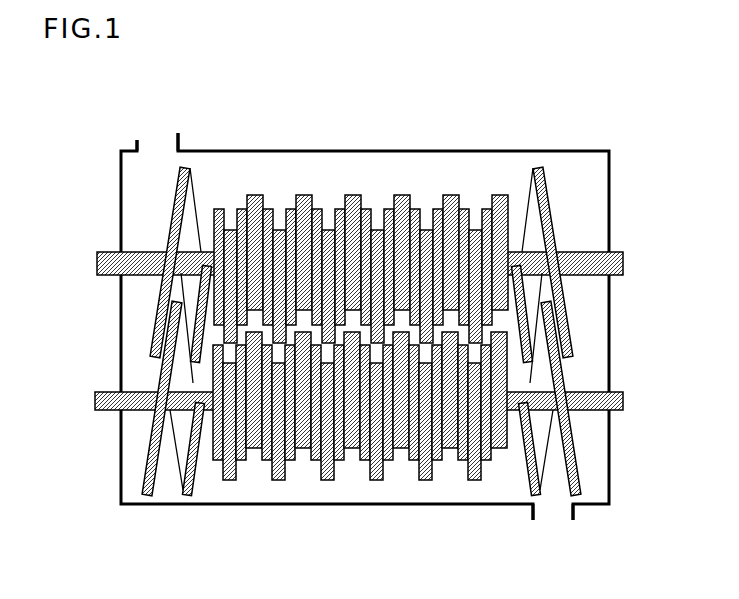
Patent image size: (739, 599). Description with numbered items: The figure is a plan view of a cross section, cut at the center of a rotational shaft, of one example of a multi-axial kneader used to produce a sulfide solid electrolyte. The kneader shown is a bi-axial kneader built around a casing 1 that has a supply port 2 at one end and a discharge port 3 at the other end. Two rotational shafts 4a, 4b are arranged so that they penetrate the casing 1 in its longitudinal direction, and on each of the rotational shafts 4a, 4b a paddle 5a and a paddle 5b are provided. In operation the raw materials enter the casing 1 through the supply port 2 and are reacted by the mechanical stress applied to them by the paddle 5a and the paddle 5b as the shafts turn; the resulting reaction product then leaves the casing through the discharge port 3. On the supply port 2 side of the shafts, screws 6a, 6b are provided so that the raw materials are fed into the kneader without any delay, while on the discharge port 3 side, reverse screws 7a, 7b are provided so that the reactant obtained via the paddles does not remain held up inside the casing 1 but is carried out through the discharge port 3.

The casing 1 is at (470, 148).
The supply port 2 is at (158, 133).
The discharge port 3 is at (555, 515).
The rotational shaft 4a is at (97, 258).
The rotational shaft 4b is at (97, 395).
The paddle 5a is at (373, 198).
The paddle 5b is at (395, 480).
The screw 6a is at (189, 166).
The screw 6b is at (184, 500).
The reverse screw 7a is at (537, 166).
The reverse screw 7b is at (524, 480).